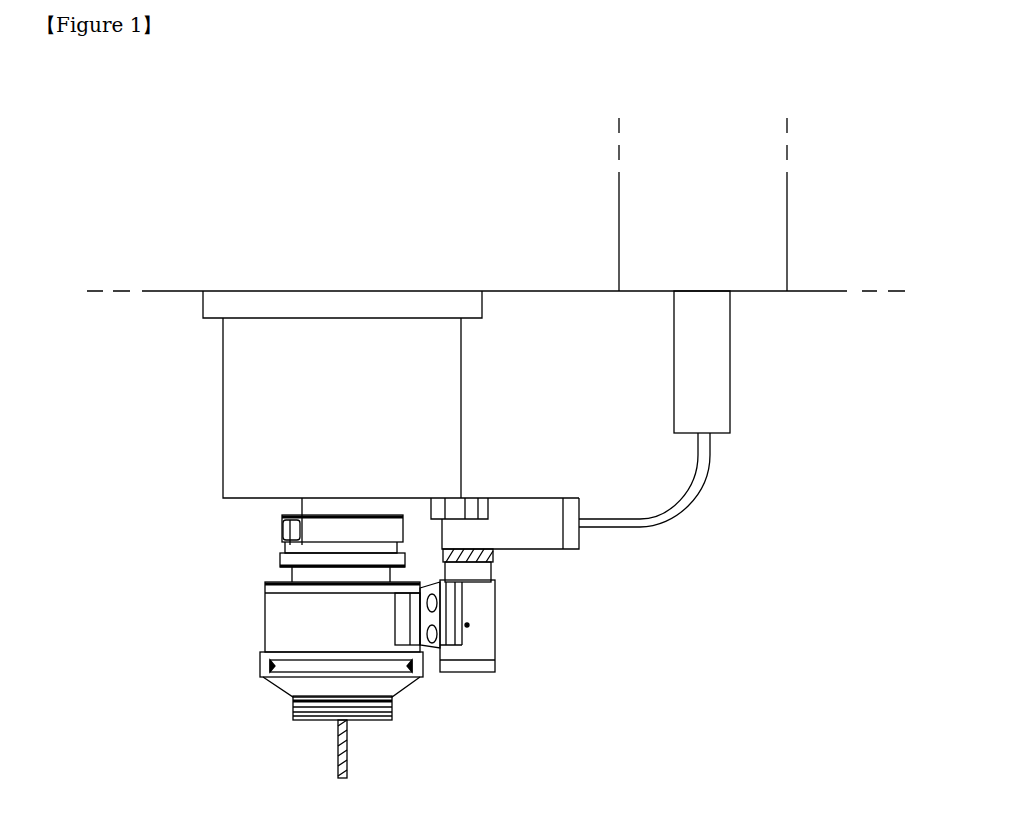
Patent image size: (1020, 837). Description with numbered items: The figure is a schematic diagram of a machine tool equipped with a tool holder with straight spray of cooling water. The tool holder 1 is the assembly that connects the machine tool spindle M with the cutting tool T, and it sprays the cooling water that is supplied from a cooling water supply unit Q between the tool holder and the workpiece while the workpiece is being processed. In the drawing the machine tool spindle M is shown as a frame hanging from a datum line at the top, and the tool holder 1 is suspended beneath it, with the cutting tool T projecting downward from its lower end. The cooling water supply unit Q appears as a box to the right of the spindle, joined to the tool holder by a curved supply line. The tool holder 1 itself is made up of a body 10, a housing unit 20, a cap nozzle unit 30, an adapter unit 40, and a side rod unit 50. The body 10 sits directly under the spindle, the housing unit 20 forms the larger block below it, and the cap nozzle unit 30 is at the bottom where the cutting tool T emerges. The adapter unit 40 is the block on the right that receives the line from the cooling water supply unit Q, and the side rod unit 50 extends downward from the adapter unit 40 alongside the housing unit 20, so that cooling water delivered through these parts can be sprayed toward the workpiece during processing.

The tool holder 1 is at (232, 628).
The body 10 is at (302, 501).
The housing unit 20 is at (266, 640).
The cap nozzle unit 30 is at (291, 710).
The adapter unit 40 is at (529, 538).
The side rod unit 50 is at (487, 624).
The machine tool spindle M is at (243, 412).
The cooling water supply unit Q is at (711, 367).
The cutting tool T is at (349, 748).